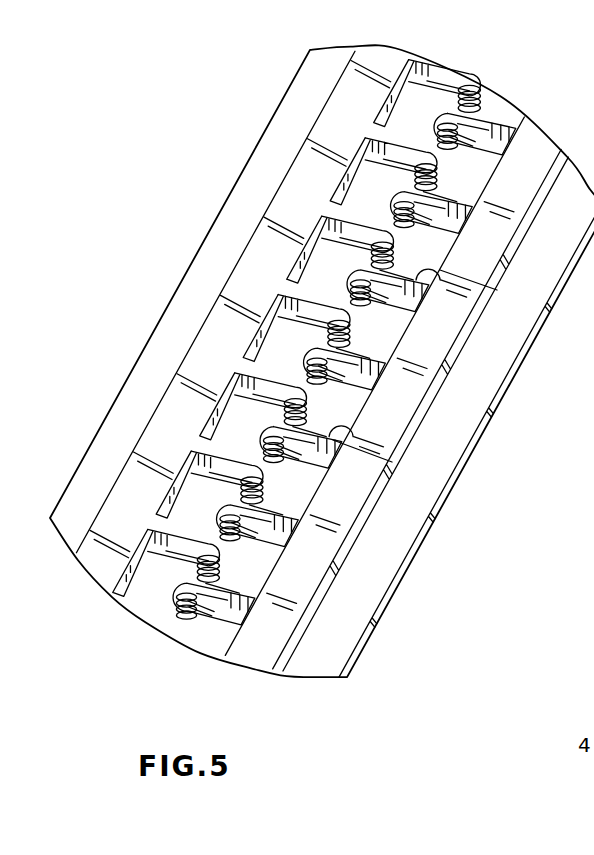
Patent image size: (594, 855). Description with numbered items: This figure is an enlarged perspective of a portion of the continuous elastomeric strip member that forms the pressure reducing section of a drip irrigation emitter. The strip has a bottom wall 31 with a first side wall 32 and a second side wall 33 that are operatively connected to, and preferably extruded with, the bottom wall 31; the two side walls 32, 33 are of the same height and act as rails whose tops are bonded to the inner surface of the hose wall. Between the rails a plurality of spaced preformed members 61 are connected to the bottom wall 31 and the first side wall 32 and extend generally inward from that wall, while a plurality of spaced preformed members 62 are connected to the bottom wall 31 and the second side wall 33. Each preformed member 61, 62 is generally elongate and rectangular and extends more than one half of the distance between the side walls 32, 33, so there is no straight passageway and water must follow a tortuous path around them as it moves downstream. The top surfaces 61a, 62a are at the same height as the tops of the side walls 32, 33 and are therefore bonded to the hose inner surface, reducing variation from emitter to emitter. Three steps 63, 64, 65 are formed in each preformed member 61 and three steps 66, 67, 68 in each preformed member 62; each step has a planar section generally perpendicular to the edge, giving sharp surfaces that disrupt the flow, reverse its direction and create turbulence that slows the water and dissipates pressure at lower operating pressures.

The bottom wall 31 is at (288, 370).
The first side wall 32 is at (157, 450).
The second side wall 33 is at (307, 570).
The preformed member 61 is at (343, 247).
The top surface 61a is at (293, 297).
The preformed member 62 is at (443, 264).
The top surface 62a is at (490, 283).
The step 63 is at (297, 298).
The step 64 is at (317, 318).
The step 65 is at (313, 329).
The step 66 is at (357, 353).
The step 67 is at (347, 371).
The step 68 is at (363, 382).